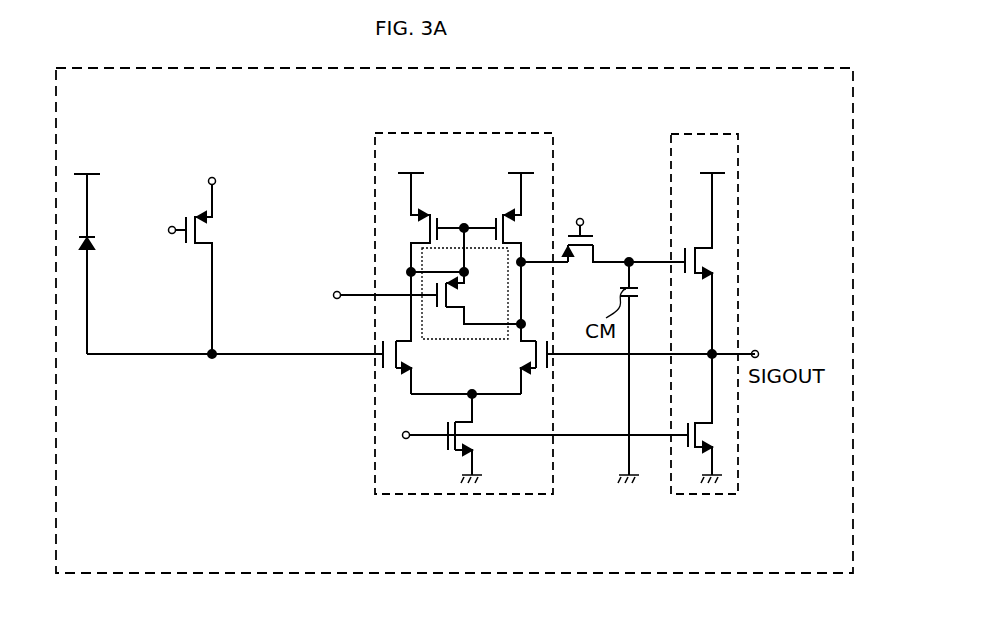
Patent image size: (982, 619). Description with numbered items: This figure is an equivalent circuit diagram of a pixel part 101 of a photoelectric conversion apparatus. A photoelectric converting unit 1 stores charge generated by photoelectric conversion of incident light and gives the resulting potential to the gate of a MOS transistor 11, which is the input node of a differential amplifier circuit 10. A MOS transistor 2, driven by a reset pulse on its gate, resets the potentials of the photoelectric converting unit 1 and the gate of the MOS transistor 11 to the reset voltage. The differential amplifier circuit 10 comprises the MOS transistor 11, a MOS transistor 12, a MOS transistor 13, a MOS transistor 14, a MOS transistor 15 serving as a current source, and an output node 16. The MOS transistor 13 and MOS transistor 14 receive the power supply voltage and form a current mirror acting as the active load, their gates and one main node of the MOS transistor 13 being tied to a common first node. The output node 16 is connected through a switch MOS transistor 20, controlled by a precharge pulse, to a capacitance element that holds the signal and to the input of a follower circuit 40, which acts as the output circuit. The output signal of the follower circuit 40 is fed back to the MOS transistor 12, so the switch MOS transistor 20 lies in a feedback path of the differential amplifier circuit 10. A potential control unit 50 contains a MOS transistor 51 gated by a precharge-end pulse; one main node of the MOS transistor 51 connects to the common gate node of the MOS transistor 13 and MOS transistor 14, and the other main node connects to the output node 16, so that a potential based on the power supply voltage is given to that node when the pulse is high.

The pixel part 101 is at (183, 574).
The photoelectric converting unit 1 is at (92, 245).
The MOS transistor 2 is at (210, 237).
The differential amplifier circuit 10 is at (465, 132).
The MOS transistor 11 is at (382, 365).
The MOS transistor 12 is at (520, 353).
The MOS transistor 13 is at (436, 214).
The MOS transistor 14 is at (499, 214).
The MOS transistor for a current source 15 is at (446, 453).
The output node 16 is at (524, 259).
The switch MOS transistor 20 is at (595, 241).
The follower circuit 40 is at (708, 134).
The potential control unit 50 is at (422, 256).
The MOS transistor 51 is at (452, 300).